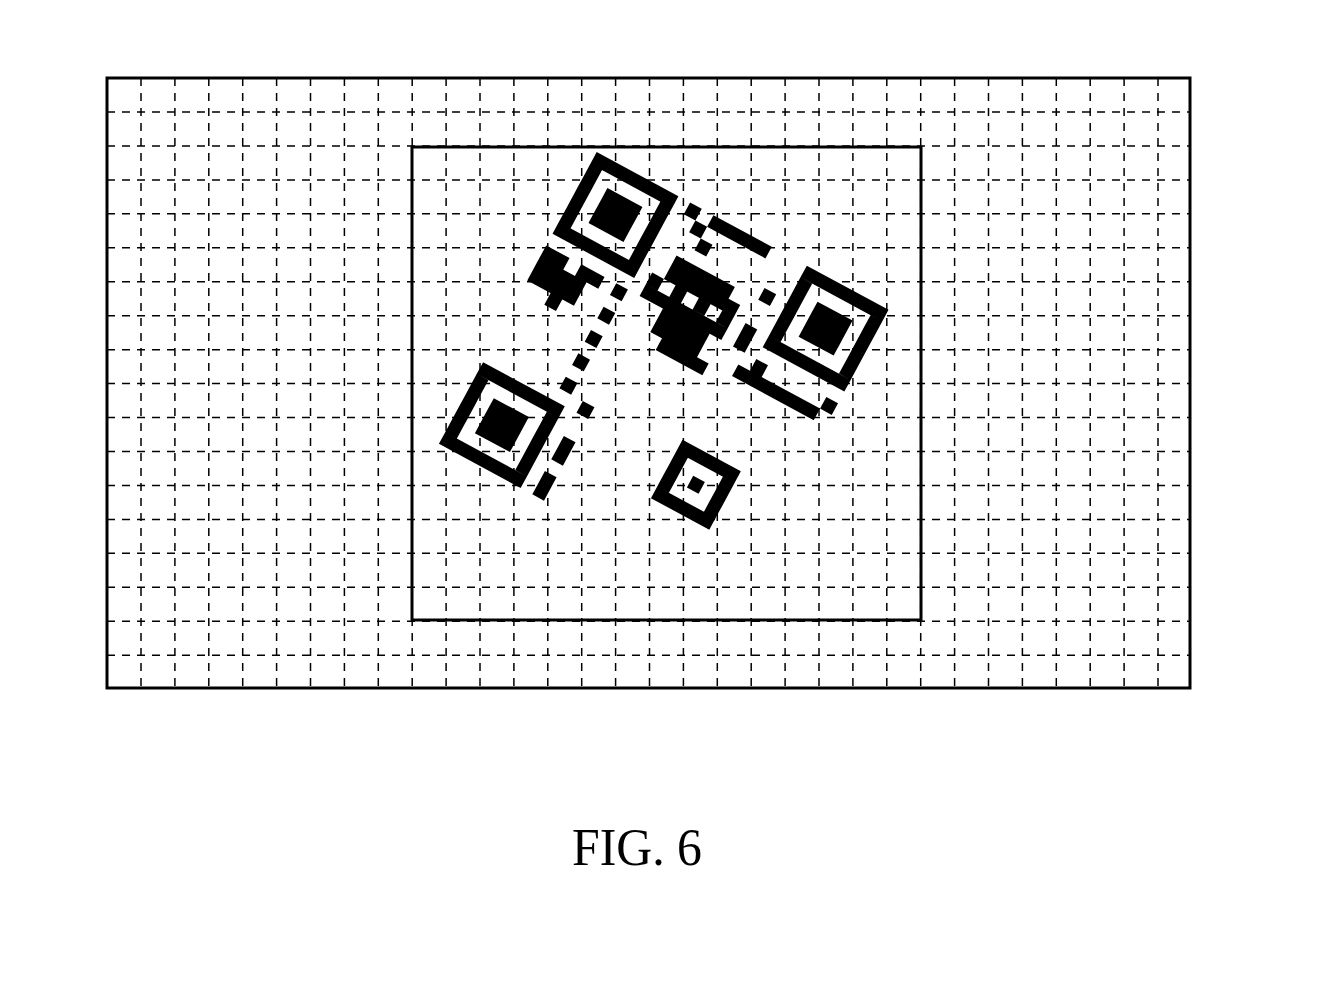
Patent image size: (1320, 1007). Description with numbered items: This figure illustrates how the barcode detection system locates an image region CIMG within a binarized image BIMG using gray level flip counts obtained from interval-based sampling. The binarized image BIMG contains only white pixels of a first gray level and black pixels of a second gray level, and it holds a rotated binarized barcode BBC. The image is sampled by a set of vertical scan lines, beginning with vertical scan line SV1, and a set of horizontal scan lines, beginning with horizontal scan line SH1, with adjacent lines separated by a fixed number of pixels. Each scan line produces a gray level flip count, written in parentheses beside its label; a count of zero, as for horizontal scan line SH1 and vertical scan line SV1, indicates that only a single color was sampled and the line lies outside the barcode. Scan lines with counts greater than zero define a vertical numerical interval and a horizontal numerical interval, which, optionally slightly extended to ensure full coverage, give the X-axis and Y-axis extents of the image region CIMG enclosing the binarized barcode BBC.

The binarized image BIMG is at (1108, 78).
The image region CIMG is at (465, 146).
The binarized barcode BBC is at (600, 151).
The horizontal scan line SH1 is at (694, 111).
The vertical scan line SV1 is at (138, 431).